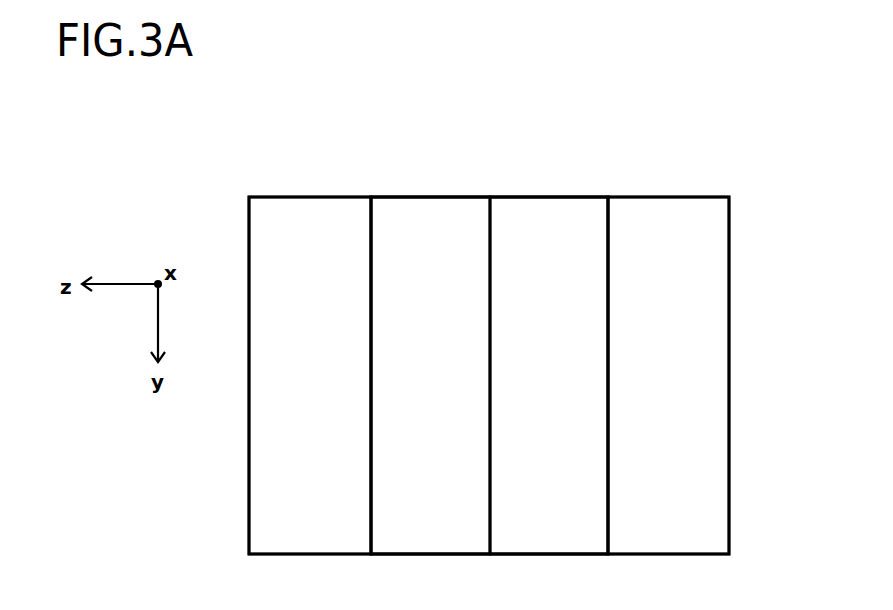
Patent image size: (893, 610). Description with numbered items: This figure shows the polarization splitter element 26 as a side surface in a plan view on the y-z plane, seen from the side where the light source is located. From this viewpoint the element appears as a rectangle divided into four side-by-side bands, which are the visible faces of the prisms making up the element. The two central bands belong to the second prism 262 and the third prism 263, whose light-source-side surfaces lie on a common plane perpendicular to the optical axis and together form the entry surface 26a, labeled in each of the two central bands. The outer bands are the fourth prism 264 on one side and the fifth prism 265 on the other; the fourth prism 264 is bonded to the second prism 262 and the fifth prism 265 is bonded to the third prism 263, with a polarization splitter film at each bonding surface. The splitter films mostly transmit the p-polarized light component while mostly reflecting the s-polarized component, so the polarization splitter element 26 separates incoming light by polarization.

The polarization splitter element 26 is at (757, 160).
The entry surface 26a is at (450, 387).
The second prism 262 is at (433, 207).
The third prism 263 is at (555, 205).
The fourth prism 264 is at (309, 205).
The fifth prism 265 is at (668, 208).